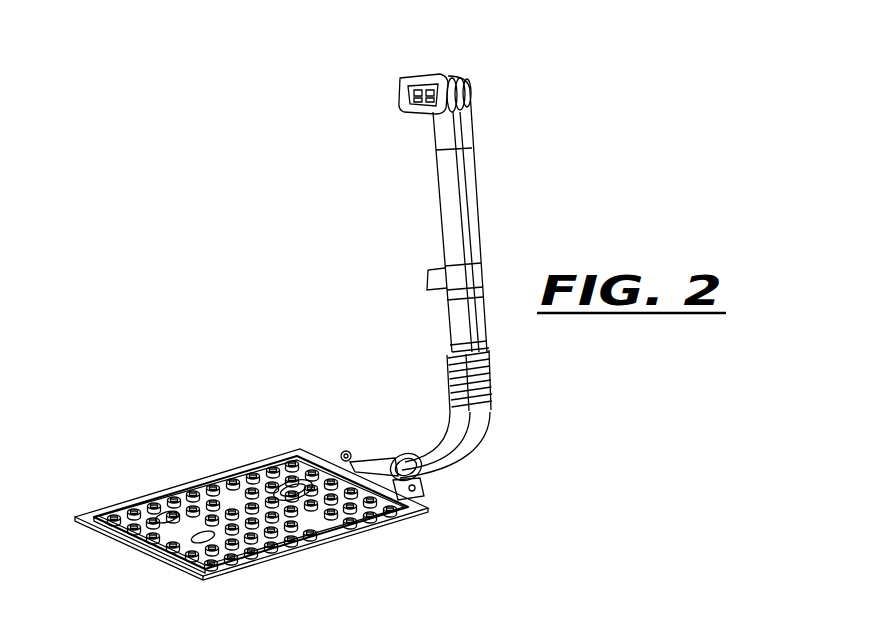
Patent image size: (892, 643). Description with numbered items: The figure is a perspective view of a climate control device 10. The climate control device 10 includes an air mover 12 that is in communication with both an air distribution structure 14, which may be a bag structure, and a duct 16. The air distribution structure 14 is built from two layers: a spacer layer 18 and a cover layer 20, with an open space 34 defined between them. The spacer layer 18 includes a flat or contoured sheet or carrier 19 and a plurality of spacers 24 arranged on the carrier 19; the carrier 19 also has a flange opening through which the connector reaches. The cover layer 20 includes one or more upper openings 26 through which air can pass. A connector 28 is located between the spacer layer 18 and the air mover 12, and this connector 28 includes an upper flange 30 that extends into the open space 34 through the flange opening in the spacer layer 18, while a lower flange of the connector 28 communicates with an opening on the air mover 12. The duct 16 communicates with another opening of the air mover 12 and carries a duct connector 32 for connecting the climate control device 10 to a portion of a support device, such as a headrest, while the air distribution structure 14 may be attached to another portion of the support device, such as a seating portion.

The climate control device 10 is at (239, 150).
The air mover 12 is at (414, 487).
The air distribution structure 14 is at (276, 552).
The duct 16 is at (438, 260).
The spacer layer 18 is at (195, 572).
The carrier 19 is at (243, 567).
The cover layer 20 is at (123, 508).
The spacers 24 is at (223, 490).
The upper openings 26 is at (157, 493).
The connector 28 is at (267, 473).
The upper flange 30 is at (388, 520).
The duct connector 32 is at (418, 110).
The open space 34 is at (123, 527).